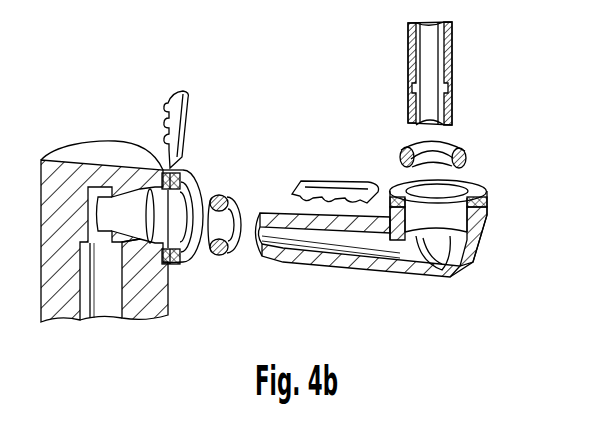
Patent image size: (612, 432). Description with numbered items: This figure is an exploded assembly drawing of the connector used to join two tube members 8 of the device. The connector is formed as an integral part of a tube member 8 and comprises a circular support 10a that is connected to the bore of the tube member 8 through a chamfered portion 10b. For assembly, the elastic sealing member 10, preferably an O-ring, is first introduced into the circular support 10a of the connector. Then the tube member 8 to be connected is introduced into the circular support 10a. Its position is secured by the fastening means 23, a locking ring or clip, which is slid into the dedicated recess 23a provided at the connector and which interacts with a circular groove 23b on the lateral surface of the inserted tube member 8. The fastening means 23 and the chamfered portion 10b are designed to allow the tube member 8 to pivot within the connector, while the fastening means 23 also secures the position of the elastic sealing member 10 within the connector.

The tube member 8 is at (348, 273).
The elastic sealing member 10 is at (213, 265).
The circular support 10a is at (170, 190).
The chamfered portion 10b is at (452, 269).
The fastening means 23 is at (193, 111).
The recess 23a is at (182, 172).
The circular groove 23b is at (452, 88).